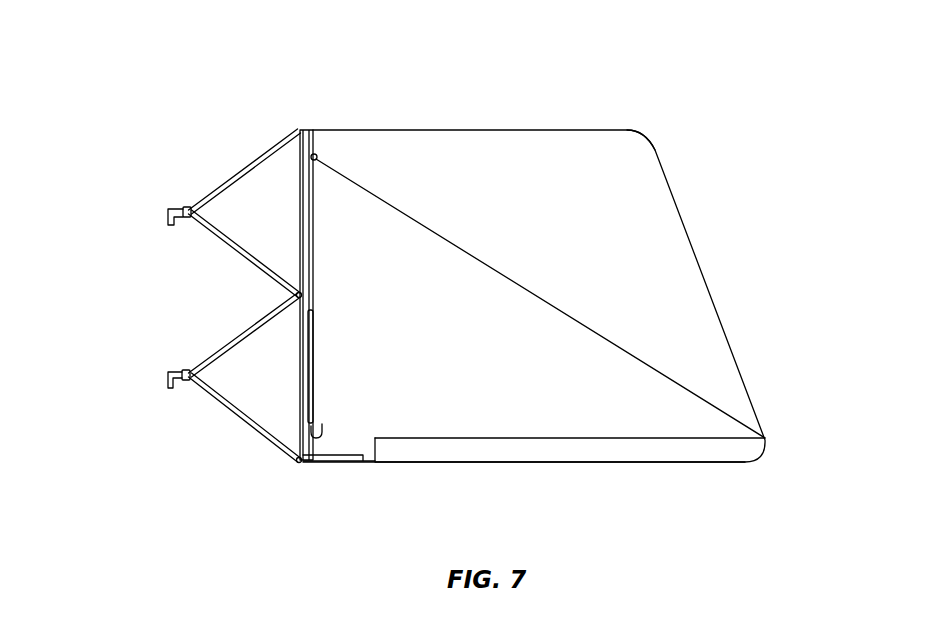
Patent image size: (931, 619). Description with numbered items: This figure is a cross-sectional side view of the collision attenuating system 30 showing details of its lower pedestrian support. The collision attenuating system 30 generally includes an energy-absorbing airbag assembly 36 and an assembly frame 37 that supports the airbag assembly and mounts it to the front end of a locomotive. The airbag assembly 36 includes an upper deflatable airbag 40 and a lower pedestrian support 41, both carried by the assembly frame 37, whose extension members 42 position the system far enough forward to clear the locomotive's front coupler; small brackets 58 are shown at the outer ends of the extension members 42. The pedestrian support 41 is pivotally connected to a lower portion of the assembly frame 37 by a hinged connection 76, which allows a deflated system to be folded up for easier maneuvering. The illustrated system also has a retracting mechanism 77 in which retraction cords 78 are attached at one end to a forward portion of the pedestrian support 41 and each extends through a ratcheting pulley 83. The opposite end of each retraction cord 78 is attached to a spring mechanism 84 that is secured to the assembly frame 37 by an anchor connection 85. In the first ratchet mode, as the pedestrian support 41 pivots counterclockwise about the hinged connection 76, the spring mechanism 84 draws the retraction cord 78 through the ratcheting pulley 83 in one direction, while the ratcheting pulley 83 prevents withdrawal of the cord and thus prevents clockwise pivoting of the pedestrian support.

The collision attenuating system 30 is at (680, 92).
The energy-absorbing airbag assembly 36 is at (706, 244).
The assembly frame 37 is at (297, 476).
The upper deflatable airbag 40 is at (660, 158).
The lower pedestrian support 41 is at (652, 452).
The extension members 42 is at (250, 160).
The bracket 58 is at (170, 208).
The hinged connection 76 is at (364, 462).
The retracting mechanism 77 is at (377, 164).
The retraction cords 78 is at (466, 246).
The ratcheting pulley 83 is at (314, 154).
The spring mechanism 84 is at (314, 342).
The anchor connection 85 is at (322, 424).